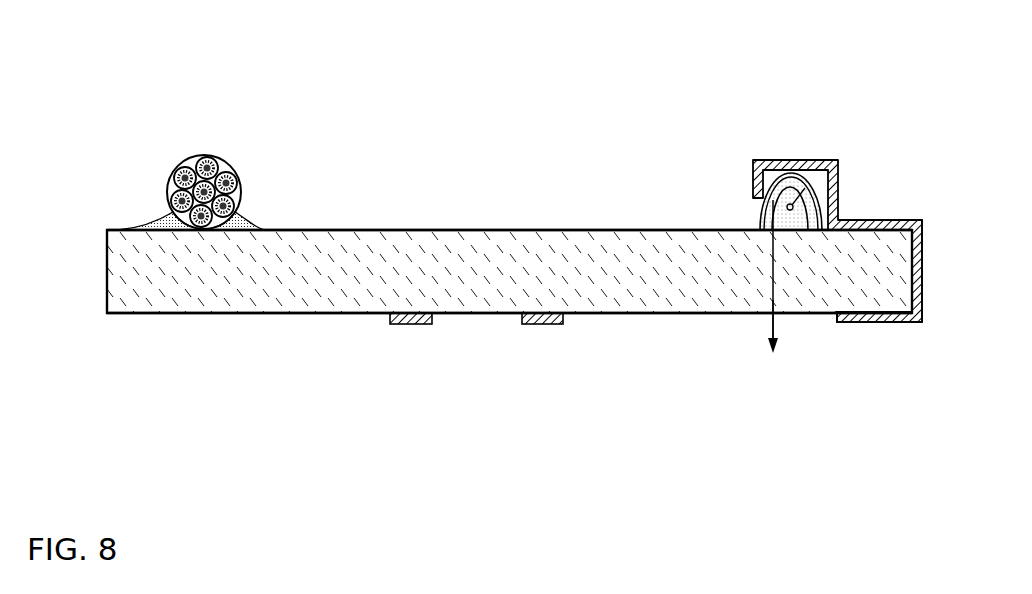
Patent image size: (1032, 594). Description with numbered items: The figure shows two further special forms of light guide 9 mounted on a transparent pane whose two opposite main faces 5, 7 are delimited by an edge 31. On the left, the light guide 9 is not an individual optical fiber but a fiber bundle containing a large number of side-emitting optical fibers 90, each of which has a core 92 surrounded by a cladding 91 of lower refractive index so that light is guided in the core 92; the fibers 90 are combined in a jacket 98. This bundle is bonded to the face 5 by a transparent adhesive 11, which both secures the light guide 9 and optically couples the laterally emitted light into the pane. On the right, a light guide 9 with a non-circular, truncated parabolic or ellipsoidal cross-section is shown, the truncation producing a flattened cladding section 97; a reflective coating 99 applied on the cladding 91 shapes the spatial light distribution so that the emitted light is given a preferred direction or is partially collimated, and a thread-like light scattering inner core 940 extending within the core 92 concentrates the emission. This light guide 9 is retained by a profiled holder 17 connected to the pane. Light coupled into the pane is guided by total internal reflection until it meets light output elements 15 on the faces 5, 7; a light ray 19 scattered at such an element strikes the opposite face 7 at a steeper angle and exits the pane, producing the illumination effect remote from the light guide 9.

The face 5 is at (542, 230).
The face 7 is at (652, 313).
The light guide 9 is at (240, 163).
The transparent adhesive 11 is at (137, 227).
The light output elements 15 is at (405, 325).
The profiled holder 17 is at (862, 219).
The light ray 19 is at (776, 320).
The edge 31 is at (107, 273).
The side-emitting optical fibers 90 is at (203, 157).
The cladding 91 is at (166, 191).
The core 92 is at (163, 185).
The flattened cladding section 97 is at (798, 215).
The jacket 98 is at (183, 162).
The reflective coating 99 is at (760, 218).
The inner core 940 is at (763, 200).